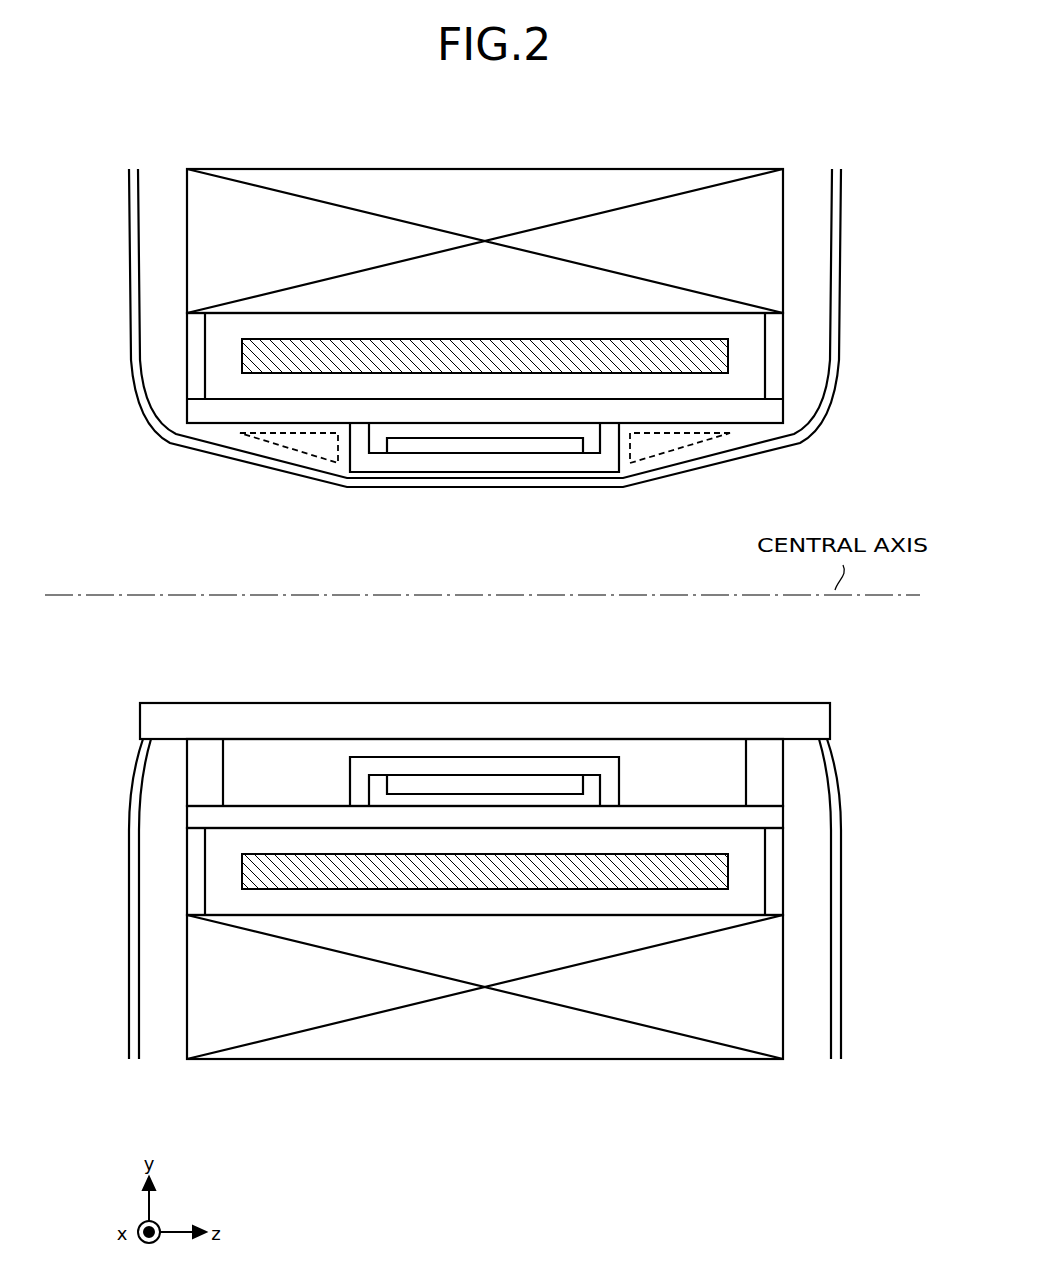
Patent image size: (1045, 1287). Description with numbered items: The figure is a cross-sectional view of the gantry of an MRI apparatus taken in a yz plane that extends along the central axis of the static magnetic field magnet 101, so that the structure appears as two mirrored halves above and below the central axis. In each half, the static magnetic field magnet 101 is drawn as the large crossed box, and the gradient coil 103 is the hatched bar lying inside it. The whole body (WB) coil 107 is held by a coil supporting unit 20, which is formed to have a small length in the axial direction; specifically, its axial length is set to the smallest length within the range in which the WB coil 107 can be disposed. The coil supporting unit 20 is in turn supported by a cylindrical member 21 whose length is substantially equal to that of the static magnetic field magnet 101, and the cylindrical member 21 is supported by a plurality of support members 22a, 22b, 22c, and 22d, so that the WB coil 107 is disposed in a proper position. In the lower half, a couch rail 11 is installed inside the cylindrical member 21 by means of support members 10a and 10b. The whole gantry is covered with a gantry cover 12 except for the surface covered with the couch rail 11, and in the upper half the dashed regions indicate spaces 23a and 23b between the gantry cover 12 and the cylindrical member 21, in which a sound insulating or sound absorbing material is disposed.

The support member 10a is at (187, 785).
The support member 10b is at (785, 765).
The couch rail 11 is at (607, 703).
The gantry cover 12 is at (843, 283).
The coil supporting unit 20 is at (522, 473).
The cylindrical member 21 is at (222, 425).
The support member 22a is at (187, 870).
The support member 22b is at (785, 856).
The support member 22c is at (187, 357).
The support member 22d is at (785, 336).
The space 23a is at (287, 449).
The space 23b is at (657, 463).
The static magnetic field magnet 101 is at (627, 169).
The gradient coil 103 is at (728, 362).
The whole body (WB) coil 107 is at (583, 443).